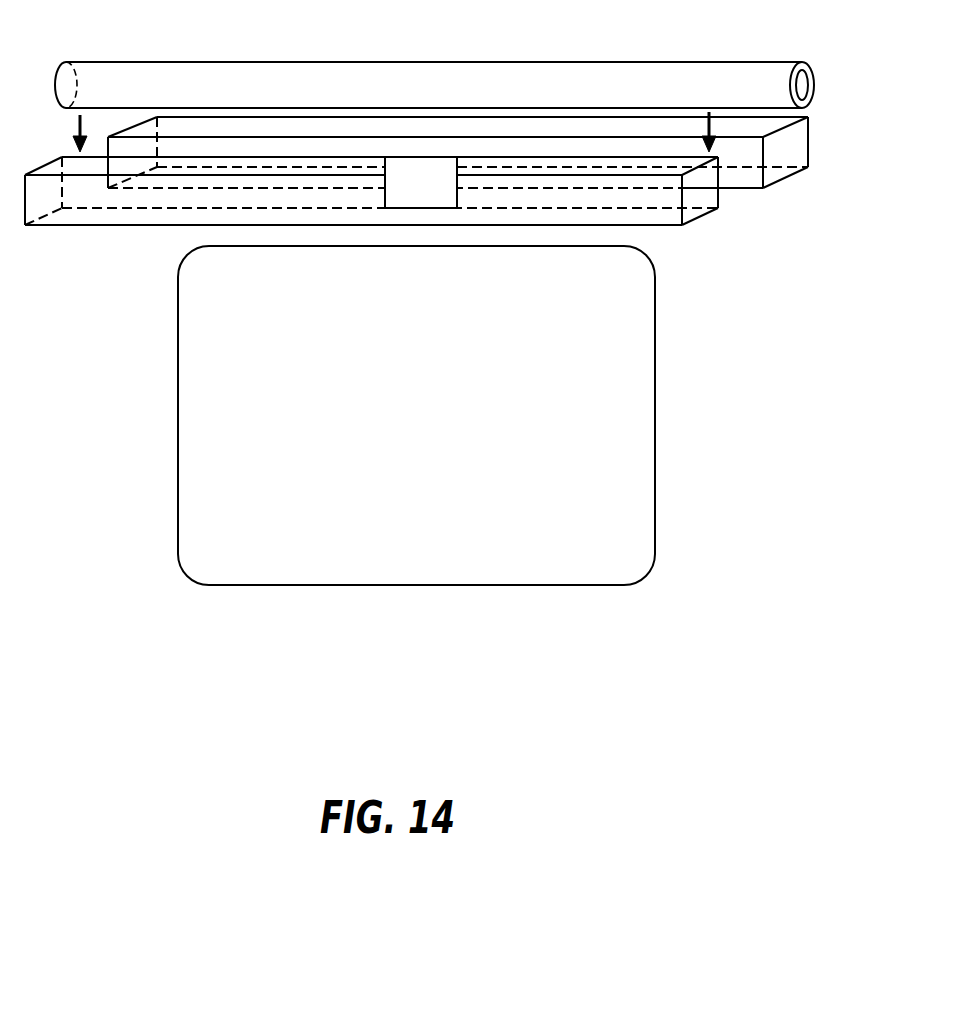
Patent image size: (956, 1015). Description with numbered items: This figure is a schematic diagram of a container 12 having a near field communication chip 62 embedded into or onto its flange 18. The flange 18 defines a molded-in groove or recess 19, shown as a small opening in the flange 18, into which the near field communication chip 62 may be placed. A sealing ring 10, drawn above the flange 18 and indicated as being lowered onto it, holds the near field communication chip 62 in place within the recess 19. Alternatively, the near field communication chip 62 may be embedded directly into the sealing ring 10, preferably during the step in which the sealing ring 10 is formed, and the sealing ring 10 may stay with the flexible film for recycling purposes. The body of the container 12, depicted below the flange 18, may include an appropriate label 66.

The sealing ring 10 is at (218, 62).
The container 12 is at (653, 597).
The flange 18 is at (800, 145).
The molded-in groove or recess 19 is at (418, 157).
The near field communication (NFC) chip 62 is at (470, 207).
The label 66 is at (200, 438).